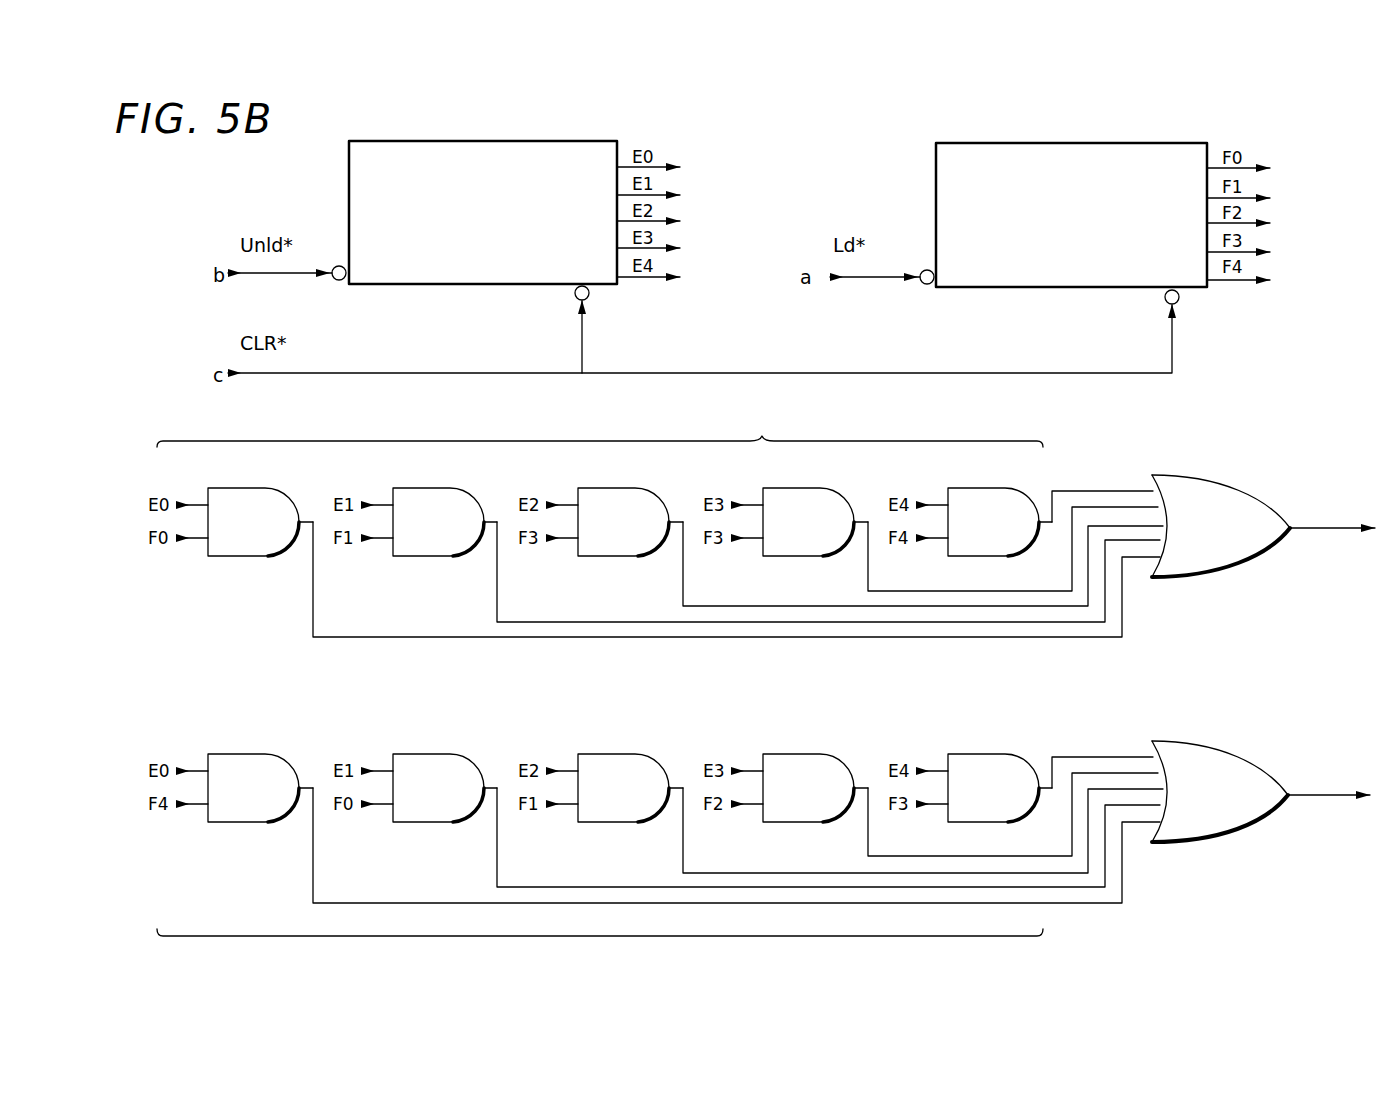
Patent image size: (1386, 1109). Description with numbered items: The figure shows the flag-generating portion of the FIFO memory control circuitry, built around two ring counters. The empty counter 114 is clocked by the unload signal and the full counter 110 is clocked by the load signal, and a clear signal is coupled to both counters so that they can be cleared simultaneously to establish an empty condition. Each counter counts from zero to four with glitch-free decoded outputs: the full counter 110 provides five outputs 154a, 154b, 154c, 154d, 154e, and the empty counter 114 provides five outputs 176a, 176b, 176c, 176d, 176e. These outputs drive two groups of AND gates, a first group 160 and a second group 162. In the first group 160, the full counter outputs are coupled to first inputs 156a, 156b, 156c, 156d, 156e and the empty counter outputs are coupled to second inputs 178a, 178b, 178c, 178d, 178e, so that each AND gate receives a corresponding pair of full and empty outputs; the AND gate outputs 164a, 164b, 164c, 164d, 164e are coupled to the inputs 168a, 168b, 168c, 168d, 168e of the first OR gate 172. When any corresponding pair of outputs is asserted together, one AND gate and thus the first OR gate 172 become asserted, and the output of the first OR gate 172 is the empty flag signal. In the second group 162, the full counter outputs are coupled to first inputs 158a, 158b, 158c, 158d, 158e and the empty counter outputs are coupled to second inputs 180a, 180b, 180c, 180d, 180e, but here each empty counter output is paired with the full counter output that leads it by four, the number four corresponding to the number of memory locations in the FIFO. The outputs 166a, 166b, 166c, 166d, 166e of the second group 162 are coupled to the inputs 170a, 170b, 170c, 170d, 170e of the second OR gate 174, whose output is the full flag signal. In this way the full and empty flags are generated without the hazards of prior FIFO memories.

The full counter 110 is at (1022, 143).
The empty counter 114 is at (436, 141).
The output of the full counter 154a is at (1212, 167).
The output of the full counter 154b is at (1255, 197).
The output of the full counter 154c is at (1255, 222).
The output of the full counter 154d is at (1255, 251).
The output of the full counter 154e is at (1225, 283).
The output of the empty counter 176a is at (622, 166).
The output of the empty counter 176b is at (665, 194).
The output of the empty counter 176c is at (665, 220).
The output of the empty counter 176d is at (665, 247).
The output of the empty counter 176e is at (634, 280).
The first group of AND gates 160 is at (600, 430).
The second group of AND gates 162 is at (600, 946).
The output of AND gate 164a is at (300, 530).
The output of AND gate 164b is at (485, 530).
The output of AND gate 164c is at (670, 530).
The output of AND gate 164d is at (855, 530).
The output of AND gate 164e is at (1046, 520).
The output of AND gate 166a is at (300, 796).
The output of AND gate 166b is at (485, 796).
The output of AND gate 166c is at (670, 796).
The output of AND gate 166d is at (855, 796).
The output of AND gate 166e is at (1041, 786).
The second input of AND gate 178a is at (197, 504).
The second input of AND gate 178b is at (382, 504).
The second input of AND gate 178c is at (567, 504).
The second input of AND gate 178d is at (752, 504).
The second input of AND gate 178e is at (937, 504).
The first input of AND gate 156a is at (198, 540).
The first input of AND gate 156b is at (383, 540).
The first input of AND gate 156c is at (568, 540).
The first input of AND gate 156d is at (753, 540).
The first input of AND gate 156e is at (938, 540).
The second input of AND gate 180a is at (197, 770).
The second input of AND gate 180b is at (382, 770).
The second input of AND gate 180c is at (567, 770).
The second input of AND gate 180d is at (752, 770).
The second input of AND gate 180e is at (937, 770).
The first input of AND gate 158a is at (198, 806).
The first input of AND gate 158b is at (383, 806).
The first input of AND gate 158c is at (568, 806).
The first input of AND gate 158d is at (753, 806).
The first input of AND gate 158e is at (938, 806).
The input of OR gate 168a is at (1114, 490).
The input of OR gate 168b is at (1117, 506).
The input of OR gate 168c is at (1137, 525).
The input of OR gate 168d is at (1130, 541).
The input of OR gate 168e is at (1140, 558).
The input of OR gate 170a is at (1128, 756).
The input of OR gate 170b is at (1125, 772).
The input of OR gate 170c is at (1112, 796).
The input of OR gate 170d is at (1130, 806).
The input of OR gate 170e is at (1140, 823).
The first OR gate 172 is at (1263, 526).
The second OR gate 174 is at (1261, 791).